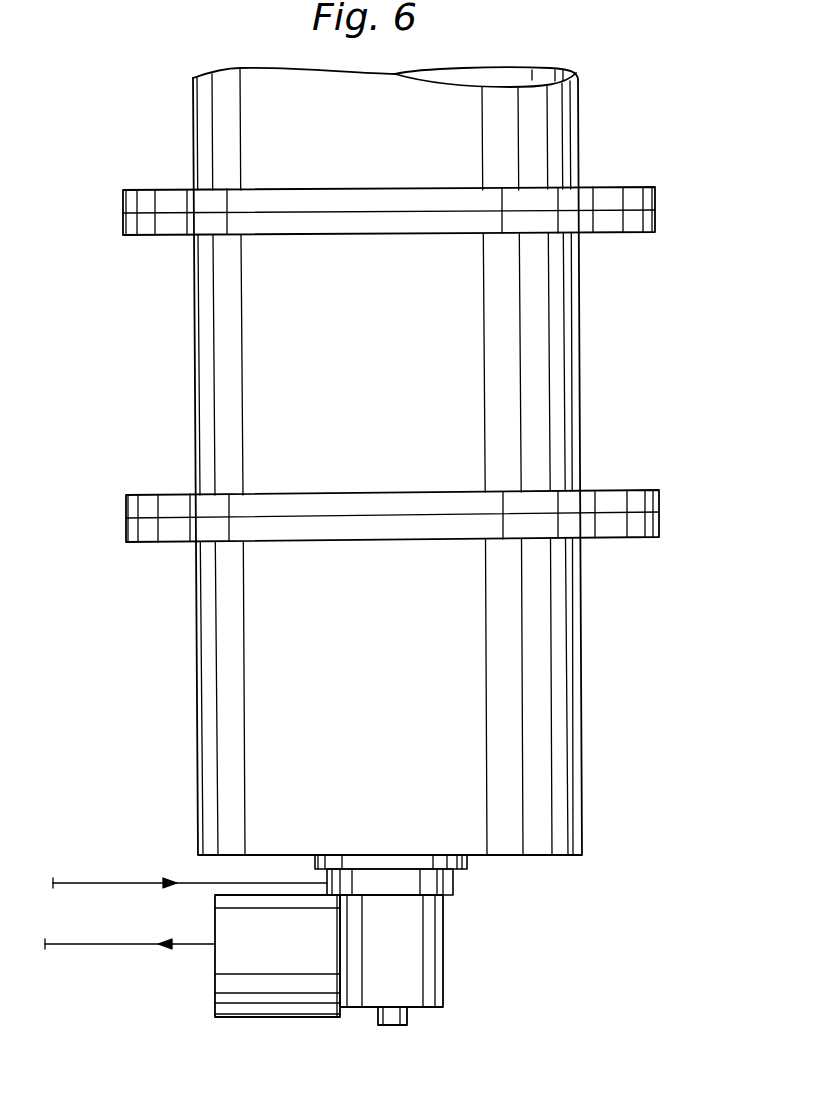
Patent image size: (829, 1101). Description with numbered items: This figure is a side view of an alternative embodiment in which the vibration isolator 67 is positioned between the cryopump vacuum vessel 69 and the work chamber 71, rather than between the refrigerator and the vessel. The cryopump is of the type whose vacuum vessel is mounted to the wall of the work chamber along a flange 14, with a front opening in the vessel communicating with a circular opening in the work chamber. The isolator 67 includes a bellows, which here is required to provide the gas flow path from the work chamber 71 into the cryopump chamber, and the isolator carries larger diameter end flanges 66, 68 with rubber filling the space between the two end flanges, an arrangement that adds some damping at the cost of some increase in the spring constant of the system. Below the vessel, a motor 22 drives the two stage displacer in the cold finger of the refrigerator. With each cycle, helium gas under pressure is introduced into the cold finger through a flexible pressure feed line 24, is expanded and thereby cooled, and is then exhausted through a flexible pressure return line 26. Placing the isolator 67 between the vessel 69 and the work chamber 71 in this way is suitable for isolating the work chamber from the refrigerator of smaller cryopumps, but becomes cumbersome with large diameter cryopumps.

The flange 14 is at (635, 538).
The motor 22 is at (297, 1017).
The flexible pressure feed line 24 is at (127, 882).
The flexible pressure return line 26 is at (127, 947).
The flange 66 is at (655, 216).
The isolator 67 is at (582, 329).
The flange 68 is at (660, 500).
The cryopump vacuum vessel 69 is at (583, 697).
The work chamber 71 is at (578, 133).